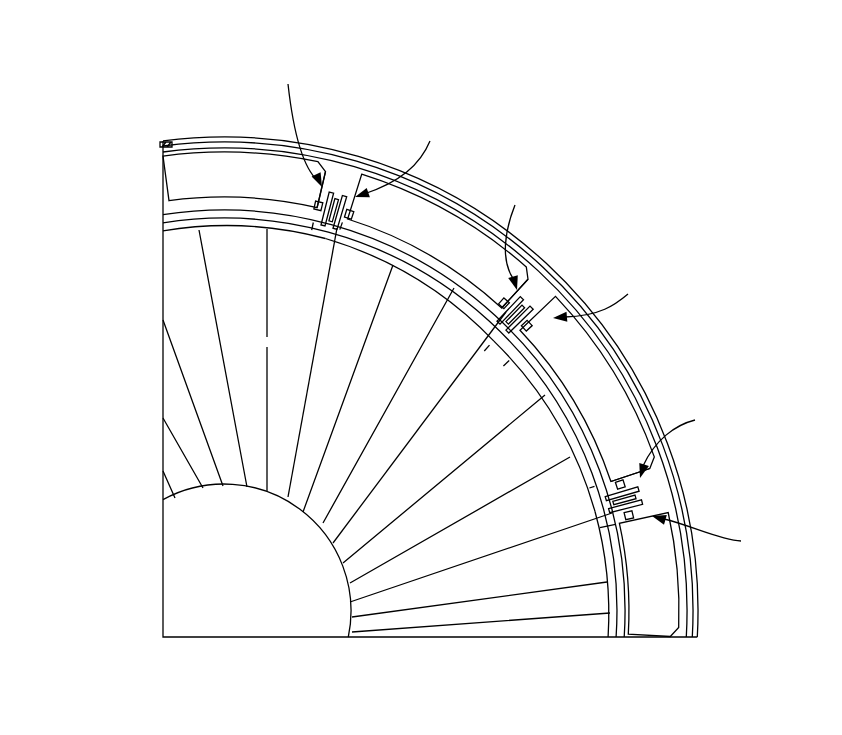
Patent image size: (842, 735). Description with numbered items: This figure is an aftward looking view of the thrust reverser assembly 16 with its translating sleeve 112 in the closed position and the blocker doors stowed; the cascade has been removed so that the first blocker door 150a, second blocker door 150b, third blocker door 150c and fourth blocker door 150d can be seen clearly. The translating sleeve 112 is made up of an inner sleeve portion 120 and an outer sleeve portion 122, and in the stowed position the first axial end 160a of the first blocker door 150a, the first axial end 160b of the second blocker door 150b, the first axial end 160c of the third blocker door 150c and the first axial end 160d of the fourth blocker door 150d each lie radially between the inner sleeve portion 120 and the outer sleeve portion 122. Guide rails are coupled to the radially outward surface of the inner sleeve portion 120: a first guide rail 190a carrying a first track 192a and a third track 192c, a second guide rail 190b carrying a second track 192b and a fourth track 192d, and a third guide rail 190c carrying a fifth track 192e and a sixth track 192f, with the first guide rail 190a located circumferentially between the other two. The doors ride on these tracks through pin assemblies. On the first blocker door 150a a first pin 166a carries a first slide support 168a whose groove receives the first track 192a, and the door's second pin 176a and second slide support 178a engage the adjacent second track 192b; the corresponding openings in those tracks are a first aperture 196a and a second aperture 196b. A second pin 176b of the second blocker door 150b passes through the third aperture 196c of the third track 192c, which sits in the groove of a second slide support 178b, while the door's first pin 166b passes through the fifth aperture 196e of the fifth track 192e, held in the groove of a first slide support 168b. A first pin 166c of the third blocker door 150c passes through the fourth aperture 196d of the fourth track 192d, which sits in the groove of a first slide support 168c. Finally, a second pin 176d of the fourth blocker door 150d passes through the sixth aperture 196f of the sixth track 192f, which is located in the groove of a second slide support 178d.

The thrust reverser assembly 16 is at (128, 107).
The translating sleeve 112 is at (100, 148).
The outer sleeve portion 122 is at (160, 145).
The inner sleeve portion 120 is at (163, 205).
The first blocker door 150a is at (462, 241).
The second blocker door 150b is at (622, 397).
The third blocker door 150c is at (222, 181).
The fourth blocker door 150d is at (675, 609).
The first axial end of first blocker door 160a is at (455, 252).
The first axial end of second blocker door 160b is at (582, 398).
The first axial end of third blocker door 160c is at (237, 200).
The first axial end of fourth blocker door 160d is at (625, 618).
The first pin 166a is at (508, 287).
The first pin of second blocker door 166b is at (630, 484).
The first pin of third blocker door 166c is at (320, 194).
The first slide support 168a is at (530, 300).
The first slide support of second blocker door 168b is at (656, 504).
The first slide support of third blocker door 168c is at (331, 183).
The mounting plate 176a is at (351, 200).
The second pin of second blocker door 176b is at (540, 328).
The second pin of fourth blocker door 176d is at (645, 520).
The fastener plate 178a is at (347, 192).
The second slide support of second blocker door 178b is at (541, 305).
The second slide support of fourth blocker door 178d is at (660, 512).
The first guide rail 190a is at (503, 330).
The second guide rail 190b is at (331, 230).
The third guide rail 190c is at (612, 512).
The first track 192a is at (497, 317).
The second track 192b is at (342, 232).
The third track 192c is at (516, 348).
The fourth track 192d is at (315, 236).
The fifth track 192e is at (620, 497).
The sixth track 192f is at (622, 535).
The direction arrow 196a is at (525, 238).
The direction arrow 196b is at (405, 160).
The third aperture 196c is at (608, 299).
The fourth aperture 196d is at (295, 126).
The fifth aperture 196e is at (687, 440).
The sixth aperture 196f is at (715, 533).